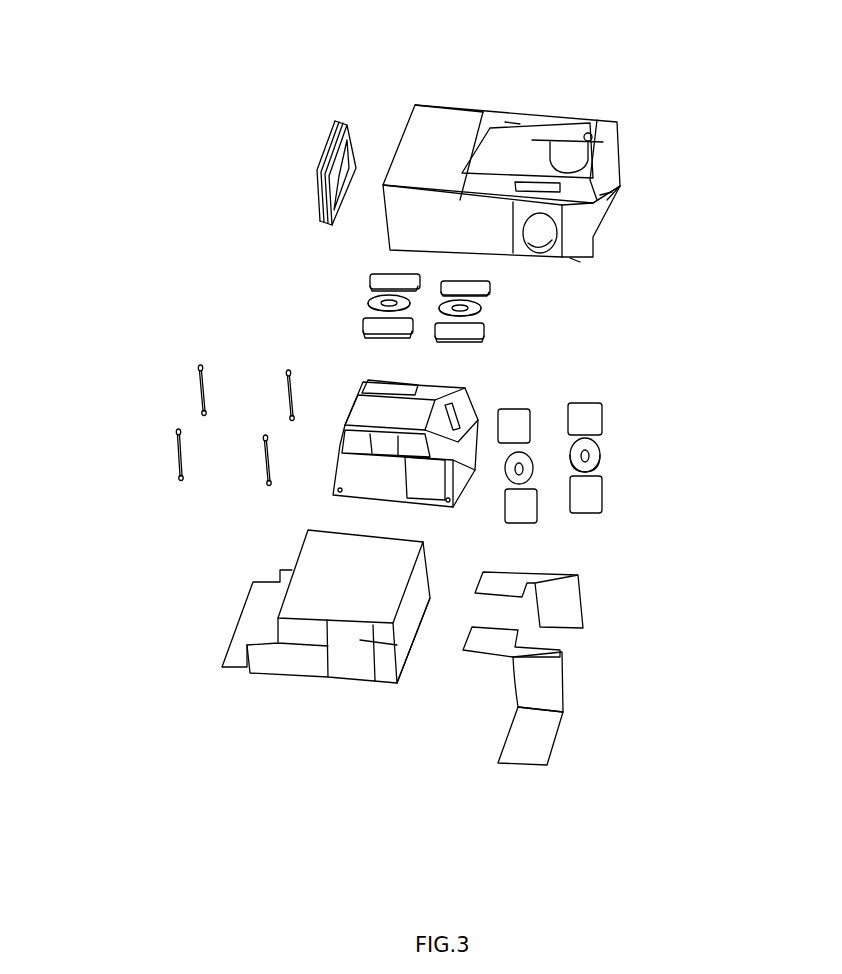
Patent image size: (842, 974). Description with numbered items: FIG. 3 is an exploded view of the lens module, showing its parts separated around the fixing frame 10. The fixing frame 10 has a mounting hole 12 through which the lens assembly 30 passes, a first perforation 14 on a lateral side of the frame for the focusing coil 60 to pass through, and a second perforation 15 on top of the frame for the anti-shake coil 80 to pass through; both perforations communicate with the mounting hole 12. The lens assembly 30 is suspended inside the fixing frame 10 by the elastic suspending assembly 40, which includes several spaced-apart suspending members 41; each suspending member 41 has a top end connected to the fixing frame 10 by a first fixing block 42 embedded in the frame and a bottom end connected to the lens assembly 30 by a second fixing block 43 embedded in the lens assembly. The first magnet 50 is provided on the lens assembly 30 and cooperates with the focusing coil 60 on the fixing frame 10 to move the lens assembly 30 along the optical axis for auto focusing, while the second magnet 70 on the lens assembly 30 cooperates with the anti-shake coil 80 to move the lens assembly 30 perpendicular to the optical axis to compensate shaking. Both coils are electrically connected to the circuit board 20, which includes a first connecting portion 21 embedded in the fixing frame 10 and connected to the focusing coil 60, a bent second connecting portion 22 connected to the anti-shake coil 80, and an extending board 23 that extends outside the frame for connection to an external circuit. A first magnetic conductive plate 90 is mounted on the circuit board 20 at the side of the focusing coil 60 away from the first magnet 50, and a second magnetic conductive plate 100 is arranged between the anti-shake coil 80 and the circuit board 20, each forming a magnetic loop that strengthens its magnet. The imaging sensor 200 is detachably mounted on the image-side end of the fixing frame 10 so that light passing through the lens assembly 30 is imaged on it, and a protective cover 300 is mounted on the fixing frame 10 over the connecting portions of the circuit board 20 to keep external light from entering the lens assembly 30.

The fixing frame 10 is at (448, 117).
The mounting hole 12 is at (605, 195).
The first perforation 14 is at (575, 262).
The second perforation 15 is at (514, 125).
The circuit board 20 is at (587, 668).
The first connecting portion 21 is at (545, 694).
The second connecting portion 22 is at (500, 642).
The extending board 23 is at (574, 736).
The lens assembly 30 is at (460, 410).
The elastic suspending assembly 40 is at (172, 426).
The suspending member 41 is at (180, 455).
The first fixing block 42 is at (177, 430).
The second fixing block 43 is at (181, 478).
The first magnet 50 is at (593, 497).
The focusing coil 60 is at (590, 456).
The second magnet 70 is at (380, 329).
The anti-shake coil 80 is at (375, 301).
The first magnetic conductive plate 90 is at (592, 413).
The second magnetic conductive plate 100 is at (380, 283).
The imaging sensor 200 is at (327, 145).
The protective cover 300 is at (263, 612).